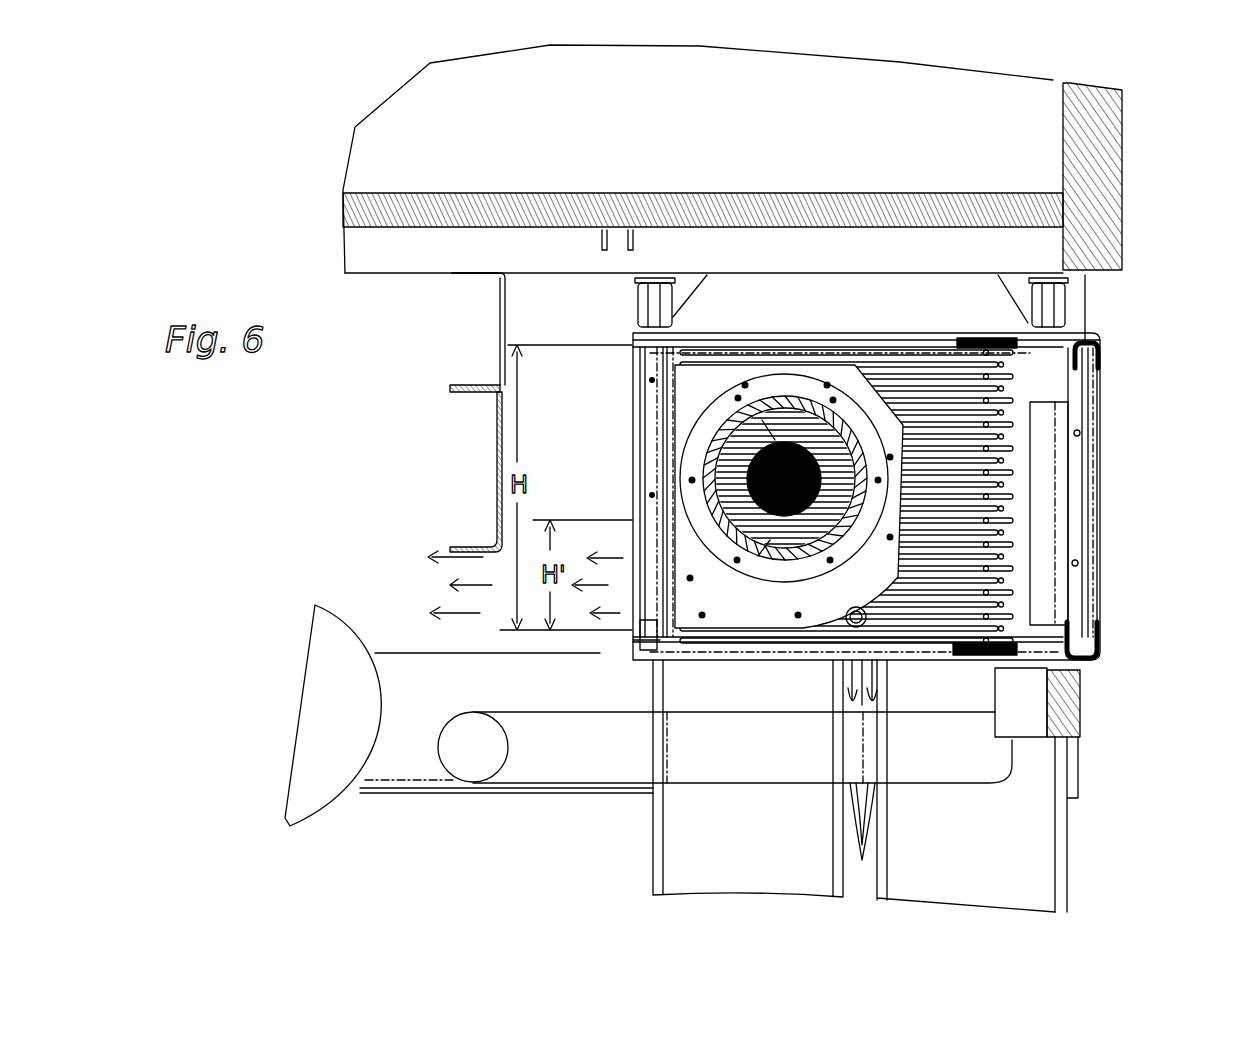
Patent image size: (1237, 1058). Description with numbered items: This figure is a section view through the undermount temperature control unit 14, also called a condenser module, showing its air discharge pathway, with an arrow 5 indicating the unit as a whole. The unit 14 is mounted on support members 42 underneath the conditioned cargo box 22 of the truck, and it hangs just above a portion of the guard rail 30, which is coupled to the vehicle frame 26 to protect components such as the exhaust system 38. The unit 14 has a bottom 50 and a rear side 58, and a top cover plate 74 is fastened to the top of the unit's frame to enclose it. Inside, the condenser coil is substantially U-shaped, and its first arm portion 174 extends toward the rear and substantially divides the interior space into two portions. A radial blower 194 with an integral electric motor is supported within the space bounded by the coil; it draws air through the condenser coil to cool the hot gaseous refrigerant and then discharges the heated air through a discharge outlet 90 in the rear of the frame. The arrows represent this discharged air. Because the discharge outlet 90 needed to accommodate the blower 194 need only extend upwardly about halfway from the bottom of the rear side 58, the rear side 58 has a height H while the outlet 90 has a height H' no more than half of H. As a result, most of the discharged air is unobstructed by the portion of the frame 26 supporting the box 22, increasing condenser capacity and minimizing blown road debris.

The heating and cooling unit 5 is at (1137, 465).
The undermount temperature control unit 14 is at (1127, 646).
The conditioned cargo box 22 is at (1118, 106).
The frame 26 is at (500, 330).
The guard rails 30 is at (1080, 718).
The exhaust system 38 is at (583, 755).
The support members 42 is at (673, 299).
The bottom 50 is at (748, 681).
The rear side 58 is at (607, 425).
The top cover plate 74 is at (888, 330).
The discharge outlet 90 is at (645, 628).
The first arm portion 174 is at (930, 620).
The radial blower 194 is at (787, 402).